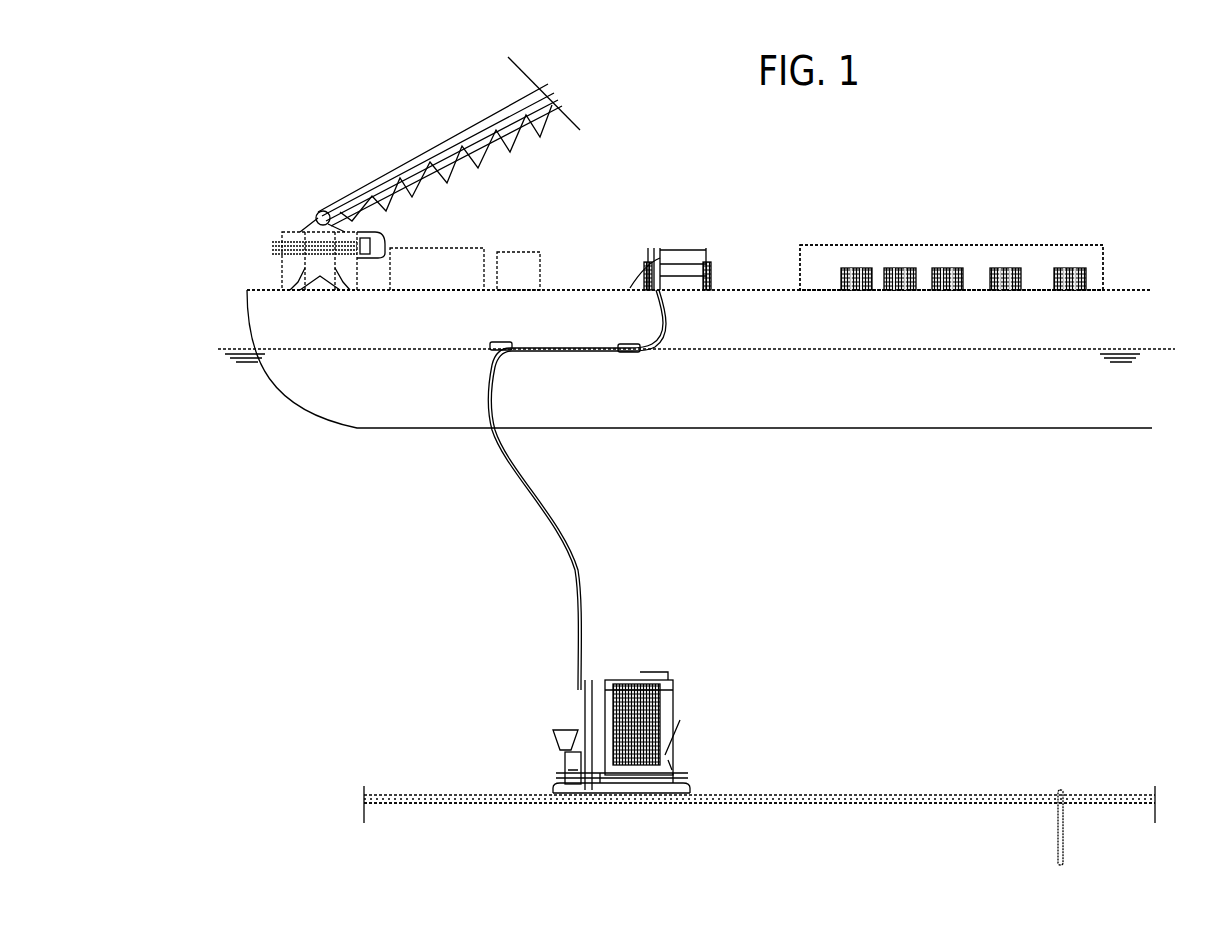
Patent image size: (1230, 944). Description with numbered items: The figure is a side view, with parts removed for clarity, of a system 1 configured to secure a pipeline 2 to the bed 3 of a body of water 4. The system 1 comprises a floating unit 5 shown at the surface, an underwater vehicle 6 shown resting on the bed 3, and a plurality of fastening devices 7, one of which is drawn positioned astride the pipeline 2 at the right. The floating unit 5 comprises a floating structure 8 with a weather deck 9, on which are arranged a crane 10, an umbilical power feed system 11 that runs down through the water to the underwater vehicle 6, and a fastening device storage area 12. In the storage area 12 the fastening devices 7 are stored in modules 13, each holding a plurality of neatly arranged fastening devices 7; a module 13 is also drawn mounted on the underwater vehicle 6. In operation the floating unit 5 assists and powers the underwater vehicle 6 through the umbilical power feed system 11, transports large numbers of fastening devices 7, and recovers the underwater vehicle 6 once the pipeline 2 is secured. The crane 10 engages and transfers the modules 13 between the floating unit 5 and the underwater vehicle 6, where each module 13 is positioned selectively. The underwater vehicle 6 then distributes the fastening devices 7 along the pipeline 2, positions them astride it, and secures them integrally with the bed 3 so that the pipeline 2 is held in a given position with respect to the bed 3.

The system 1 is at (1135, 163).
The pipeline 2 is at (842, 795).
The bed 3 is at (948, 815).
The body of water 4 is at (1033, 670).
The floating unit 5 is at (936, 160).
The underwater vehicle 6 is at (690, 712).
The fastening device 7 is at (682, 686).
The floating structure 8 is at (246, 304).
The weather deck 9 is at (732, 284).
The crane 10 is at (414, 128).
The umbilical power feed system 11 is at (680, 232).
The fastening device storage area 12 is at (940, 200).
The module 13 is at (902, 262).